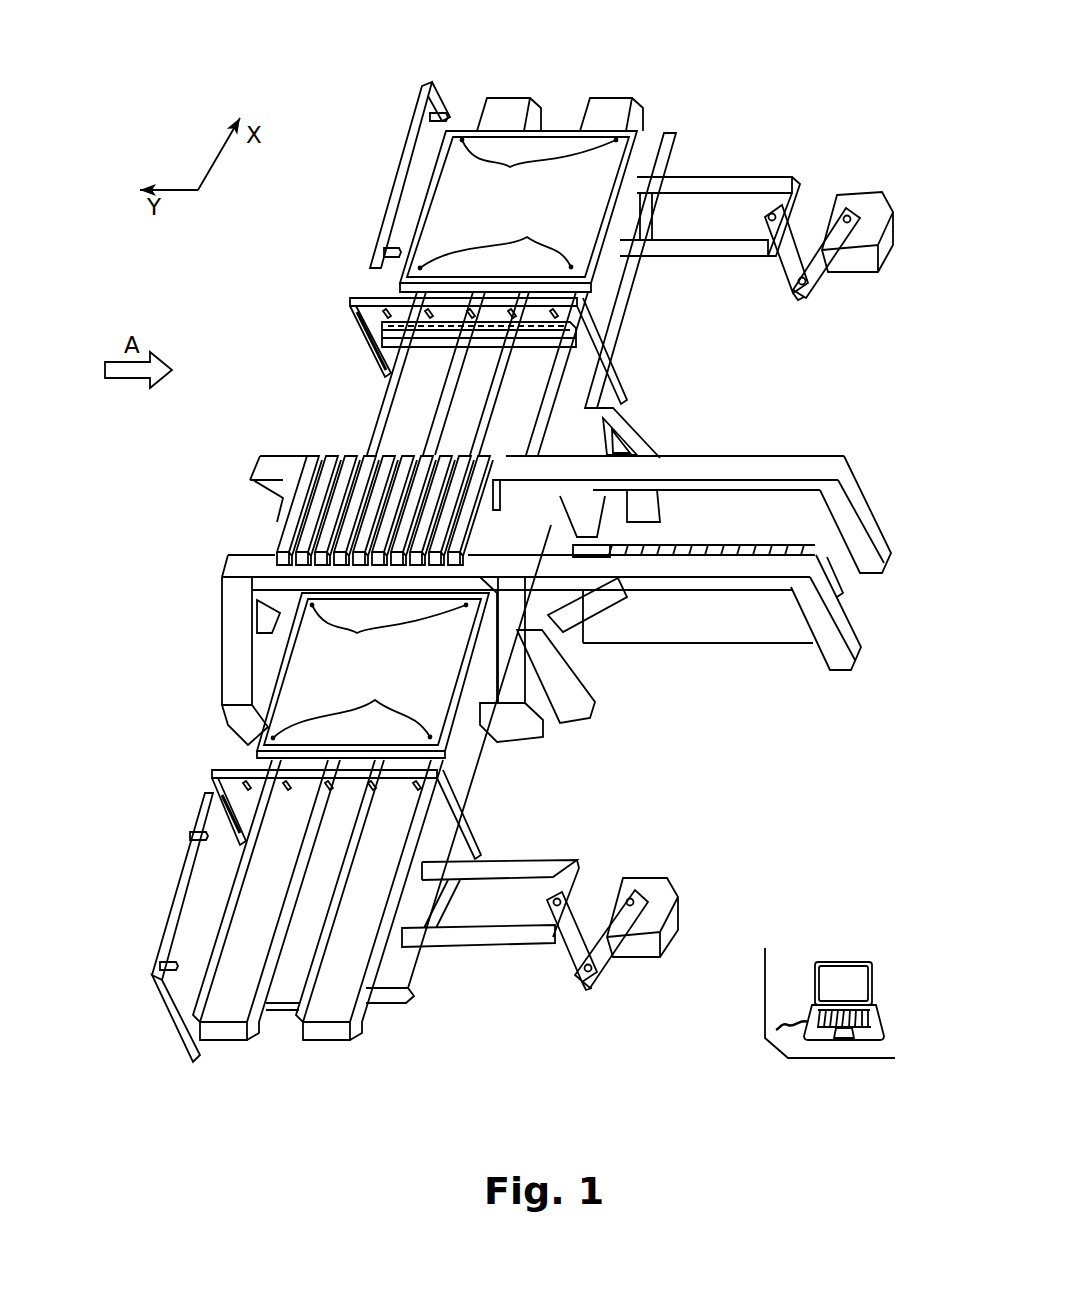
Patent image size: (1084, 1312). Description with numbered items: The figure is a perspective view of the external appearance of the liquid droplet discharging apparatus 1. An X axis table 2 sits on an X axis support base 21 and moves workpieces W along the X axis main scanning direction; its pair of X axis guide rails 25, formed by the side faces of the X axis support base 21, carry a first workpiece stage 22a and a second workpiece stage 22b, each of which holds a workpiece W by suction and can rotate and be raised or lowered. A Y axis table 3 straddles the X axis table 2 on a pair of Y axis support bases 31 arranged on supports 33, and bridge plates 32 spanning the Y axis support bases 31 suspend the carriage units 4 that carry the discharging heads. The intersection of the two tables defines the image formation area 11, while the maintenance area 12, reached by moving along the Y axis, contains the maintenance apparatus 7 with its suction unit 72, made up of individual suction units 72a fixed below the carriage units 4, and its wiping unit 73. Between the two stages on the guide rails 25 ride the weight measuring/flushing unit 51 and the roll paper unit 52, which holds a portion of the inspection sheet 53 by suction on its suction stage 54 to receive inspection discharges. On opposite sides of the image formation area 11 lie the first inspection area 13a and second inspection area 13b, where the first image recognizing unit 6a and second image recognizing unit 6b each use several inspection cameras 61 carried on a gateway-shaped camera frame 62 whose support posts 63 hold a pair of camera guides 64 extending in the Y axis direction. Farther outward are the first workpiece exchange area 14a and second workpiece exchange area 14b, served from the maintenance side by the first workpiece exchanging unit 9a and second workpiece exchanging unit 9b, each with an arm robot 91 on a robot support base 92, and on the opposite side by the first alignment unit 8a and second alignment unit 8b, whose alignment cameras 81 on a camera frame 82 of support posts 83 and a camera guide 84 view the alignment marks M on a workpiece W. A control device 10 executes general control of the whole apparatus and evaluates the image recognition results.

The liquid droplet discharging apparatus 1 is at (495, 562).
The X axis table 2 is at (464, 584).
The Y axis table 3 is at (486, 542).
The carriage unit 4 is at (365, 474).
The first image recognizing unit 6a is at (469, 308).
The second image recognizing unit 6b is at (325, 770).
The maintenance apparatus 7 is at (694, 471).
The first alignment unit 8a is at (410, 175).
The second alignment unit 8b is at (161, 927).
The first workpiece exchanging unit 9a is at (740, 167).
The second workpiece exchanging unit 9b is at (490, 966).
The control device 10 is at (873, 985).
The image formation area 11 is at (516, 445).
The maintenance area 12 is at (737, 593).
The first inspection area 13a is at (426, 338).
The second inspection area 13b is at (283, 791).
The first workpiece exchange area 14a is at (365, 175).
The second workpiece exchange area 14b is at (147, 927).
The X axis support base 21 is at (393, 1002).
The first workpiece stage 22a is at (640, 140).
The second workpiece stage 22b is at (458, 748).
The X axis guide rail 25 is at (231, 1042).
The Y axis support base 31 is at (258, 460).
The bridge plate 32 is at (342, 455).
The support 33 is at (572, 716).
The weight measuring/flushing unit 51 is at (618, 305).
The roll paper unit 52 is at (552, 351).
The inspection sheet 53 is at (598, 346).
The suction stage 54 is at (598, 336).
The inspection camera 61 is at (466, 318).
The camera frame 62 is at (388, 554).
The support post 63 is at (352, 310).
The camera guide 64 is at (372, 298).
The suction unit 72 is at (694, 488).
The individual suction unit 72a is at (640, 543).
The wiping unit 73 is at (592, 543).
The alignment camera 81 is at (392, 248).
The camera frame 82 is at (269, 537).
The support post 83 is at (444, 98).
The camera guide 84 is at (425, 98).
The arm robot 91 is at (688, 560).
The robot support base 92 is at (862, 190).
The workpiece W is at (548, 140).
The alignment mark M is at (445, 439).